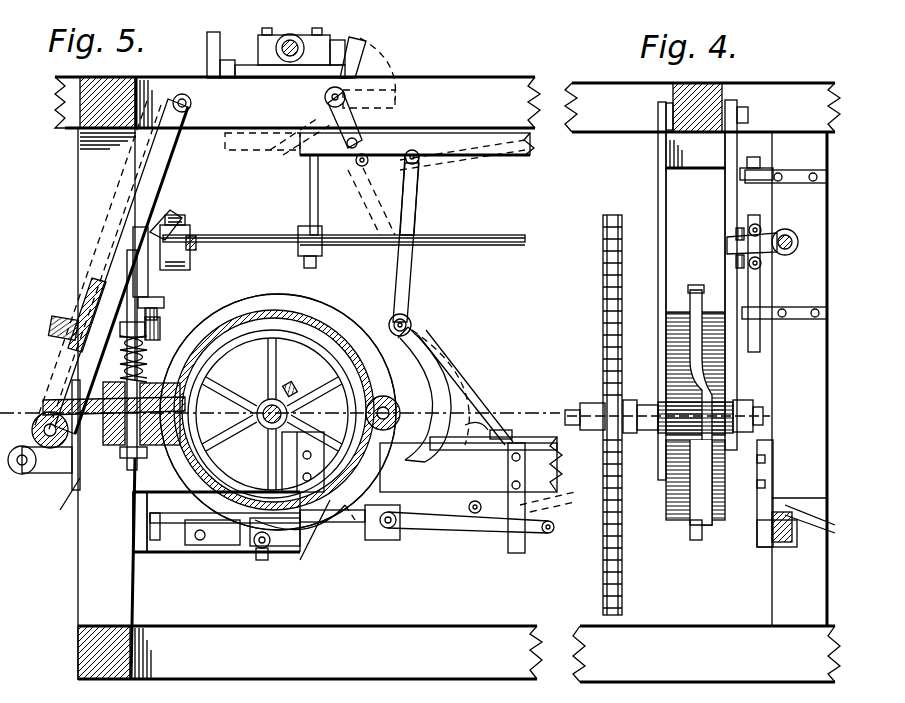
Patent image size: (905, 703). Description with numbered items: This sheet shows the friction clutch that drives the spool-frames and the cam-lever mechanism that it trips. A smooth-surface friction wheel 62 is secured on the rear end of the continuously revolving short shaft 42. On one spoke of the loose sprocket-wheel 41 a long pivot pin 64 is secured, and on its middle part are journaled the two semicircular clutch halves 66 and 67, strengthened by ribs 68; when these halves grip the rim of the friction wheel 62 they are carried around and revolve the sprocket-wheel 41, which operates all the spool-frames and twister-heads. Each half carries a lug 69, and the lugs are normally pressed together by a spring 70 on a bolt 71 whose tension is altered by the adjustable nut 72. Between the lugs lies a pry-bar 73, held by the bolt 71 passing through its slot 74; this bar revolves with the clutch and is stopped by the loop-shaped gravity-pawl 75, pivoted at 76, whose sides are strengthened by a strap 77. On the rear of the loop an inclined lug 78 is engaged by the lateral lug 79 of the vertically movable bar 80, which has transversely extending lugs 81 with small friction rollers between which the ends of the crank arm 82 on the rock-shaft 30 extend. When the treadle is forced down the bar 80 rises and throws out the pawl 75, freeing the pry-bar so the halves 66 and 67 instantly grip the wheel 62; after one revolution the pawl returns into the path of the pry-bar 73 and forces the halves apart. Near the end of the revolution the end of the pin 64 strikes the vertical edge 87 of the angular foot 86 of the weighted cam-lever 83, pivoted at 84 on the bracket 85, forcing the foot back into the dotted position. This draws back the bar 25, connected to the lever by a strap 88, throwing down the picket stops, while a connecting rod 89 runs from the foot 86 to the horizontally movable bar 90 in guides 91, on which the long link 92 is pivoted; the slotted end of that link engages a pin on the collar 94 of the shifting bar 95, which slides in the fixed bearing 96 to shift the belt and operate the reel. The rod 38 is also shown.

In FIG. 5, the bar 25 is at (504, 148).
In FIG. 4, the rock-shaft 30 is at (801, 240).
In FIG. 5, the rod 38 is at (344, 227).
In FIG. 4, the sprocket-wheel 41 is at (620, 585).
In FIG. 5, the short shaft 42 is at (270, 408).
In FIG. 4, the short shaft 42 is at (588, 408).
In FIG. 5, the friction wheel 62 is at (268, 330).
In FIG. 5, the pivot pin 64 is at (386, 396).
In FIG. 5, the clutch half 66 is at (342, 318).
In FIG. 4, the clutch half 66 is at (678, 312).
In FIG. 5, the clutch half 67 is at (232, 522).
In FIG. 4, the clutch half 67 is at (666, 508).
In FIG. 5, the ribs 68 is at (320, 300).
In FIG. 4, the ribs 68 is at (698, 540).
In FIG. 5, the lug 69 is at (150, 388).
In FIG. 5, the spring 70 is at (122, 336).
In FIG. 5, the bolt 71 is at (78, 450).
In FIG. 5, the adjustable nut 72 is at (126, 328).
In FIG. 5, the pry-bar 73 is at (112, 430).
In FIG. 5, the slot 74 is at (60, 503).
In FIG. 5, the gravity-pawl 75 is at (52, 326).
In FIG. 4, the gravity-pawl 75 is at (726, 275).
In FIG. 5, the pivot 76 is at (192, 103).
In FIG. 4, the pivot 76 is at (647, 288).
In FIG. 5, the strap 77 is at (93, 296).
In FIG. 4, the strap 77 is at (695, 170).
In FIG. 5, the inclined lug 78 is at (168, 222).
In FIG. 5, the lateral lug 79 is at (173, 272).
In FIG. 4, the lateral lug 79 is at (730, 246).
In FIG. 5, the vertically movable bar 80 is at (157, 300).
In FIG. 4, the vertically movable bar 80 is at (762, 290).
In FIG. 5, the lugs 81 is at (186, 222).
In FIG. 4, the lugs 81 is at (762, 228).
In FIG. 5, the crank arm 82 is at (194, 247).
In FIG. 4, the crank arm 82 is at (738, 262).
In FIG. 5, the cam-lever 83 is at (440, 356).
In FIG. 5, the pivot 84 is at (410, 322).
In FIG. 5, the bracket 85 is at (470, 396).
In FIG. 5, the angular foot 86 is at (370, 545).
In FIG. 5, the vertical edge 87 is at (327, 460).
In FIG. 5, the strap 88 is at (452, 165).
In FIG. 5, the connecting rod 89 is at (490, 536).
In FIG. 5, the horizontally movable bar 90 is at (404, 542).
In FIG. 4, the horizontally movable bar 90 is at (783, 542).
In FIG. 4, the guides 91 is at (600, 510).
In FIG. 5, the long link 92 is at (322, 540).
In FIG. 5, the collar 94 is at (258, 560).
In FIG. 5, the shifting bar 95 is at (205, 570).
In FIG. 5, the fixed bearing 96 is at (165, 550).